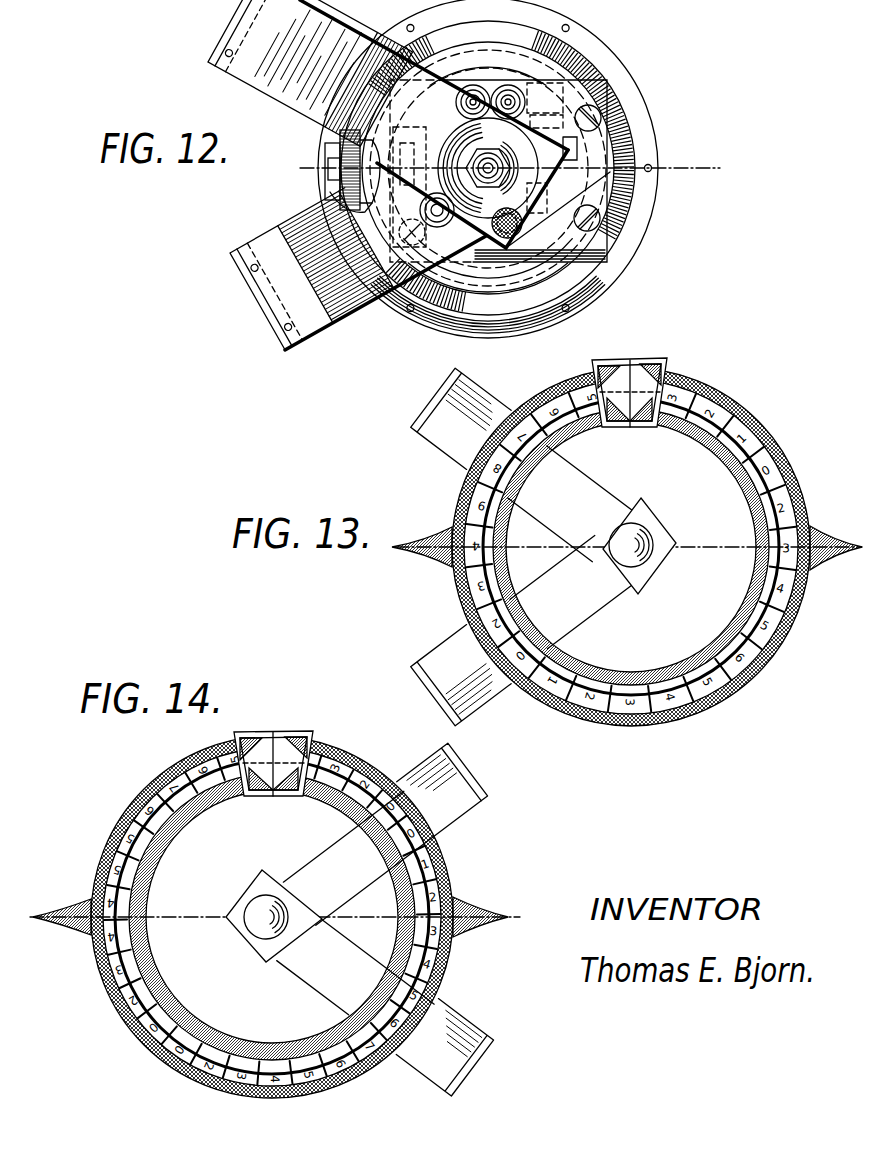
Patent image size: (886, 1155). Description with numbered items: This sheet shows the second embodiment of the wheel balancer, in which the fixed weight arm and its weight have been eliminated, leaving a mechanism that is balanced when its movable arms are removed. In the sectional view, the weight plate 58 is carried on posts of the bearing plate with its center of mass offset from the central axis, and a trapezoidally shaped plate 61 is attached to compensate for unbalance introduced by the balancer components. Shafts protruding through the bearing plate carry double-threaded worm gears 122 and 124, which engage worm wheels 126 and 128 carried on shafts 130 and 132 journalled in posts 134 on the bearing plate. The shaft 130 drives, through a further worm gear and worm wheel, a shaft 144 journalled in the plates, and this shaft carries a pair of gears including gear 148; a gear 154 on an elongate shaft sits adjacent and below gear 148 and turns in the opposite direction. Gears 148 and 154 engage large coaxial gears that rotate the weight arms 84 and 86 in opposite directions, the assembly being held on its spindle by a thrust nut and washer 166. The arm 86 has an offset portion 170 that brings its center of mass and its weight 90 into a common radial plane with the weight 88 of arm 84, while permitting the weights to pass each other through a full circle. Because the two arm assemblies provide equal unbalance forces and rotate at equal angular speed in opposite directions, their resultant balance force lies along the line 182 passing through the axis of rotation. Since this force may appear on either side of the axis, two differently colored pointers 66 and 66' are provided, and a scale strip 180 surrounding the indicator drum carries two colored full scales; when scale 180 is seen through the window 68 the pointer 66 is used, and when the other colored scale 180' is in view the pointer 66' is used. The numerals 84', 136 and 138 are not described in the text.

In FIG. 12, the weight plate 58 is at (607, 80).
In FIG. 12, the trapezoidally shaped plate 61 is at (638, 184).
In FIG. 13, the pointer 66 is at (836, 538).
In FIG. 14, the pointer 66 is at (480, 911).
In FIG. 13, the pointer 66' is at (422, 537).
In FIG. 14, the pointer 66' is at (62, 907).
In FIG. 13, the window 68 is at (665, 360).
In FIG. 14, the window 68 is at (312, 730).
In FIG. 12, the weight arm 84 is at (388, 75).
In FIG. 13, the weight arm 84 is at (567, 463).
In FIG. 14, the sighting arm 84' is at (348, 982).
In FIG. 12, the weight arm 86 is at (336, 330).
In FIG. 13, the weight arm 86 is at (598, 612).
In FIG. 14, the weight arm 86 is at (318, 845).
In FIG. 13, the weight 88 is at (448, 364).
In FIG. 14, the weight 88 is at (497, 1038).
In FIG. 12, the weight 90 is at (241, 256).
In FIG. 13, the weight 90 is at (432, 660).
In FIG. 14, the weight 90 is at (485, 800).
In FIG. 12, the double-threaded worm gear 122 is at (496, 238).
In FIG. 12, the double-threaded worm gear 124 is at (478, 201).
In FIG. 12, the worm wheel 126 is at (528, 261).
In FIG. 12, the worm wheel 128 is at (459, 103).
In FIG. 12, the shaft 130 is at (560, 170).
In FIG. 12, the shaft 132 is at (440, 118).
In FIG. 12, the posts 134 is at (562, 150).
In FIG. 12, the adjusting knob 136 is at (325, 152).
In FIG. 12, the housing ring 138 is at (640, 112).
In FIG. 12, the shaft 144 is at (508, 85).
In FIG. 12, the gear 148 is at (497, 66).
In FIG. 12, the gear 154 is at (470, 85).
In FIG. 12, the thrust nut and washer 166 is at (510, 143).
In FIG. 13, the thrust nut and washer 166 is at (645, 521).
In FIG. 14, the thrust nut and washer 166 is at (247, 897).
In FIG. 12, the offset portion 170 is at (322, 206).
In FIG. 13, the scale strip 180 is at (631, 532).
In FIG. 14, the scale strip 180 is at (272, 913).
In FIG. 13, the colored scale 180' is at (631, 579).
In FIG. 12, the line 182 is at (674, 166).
In FIG. 13, the line 182 is at (702, 547).
In FIG. 14, the line 182 is at (200, 904).